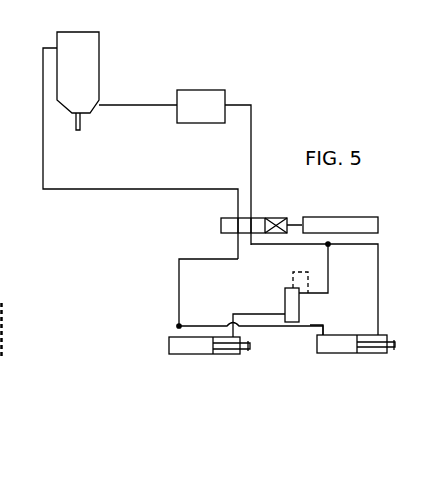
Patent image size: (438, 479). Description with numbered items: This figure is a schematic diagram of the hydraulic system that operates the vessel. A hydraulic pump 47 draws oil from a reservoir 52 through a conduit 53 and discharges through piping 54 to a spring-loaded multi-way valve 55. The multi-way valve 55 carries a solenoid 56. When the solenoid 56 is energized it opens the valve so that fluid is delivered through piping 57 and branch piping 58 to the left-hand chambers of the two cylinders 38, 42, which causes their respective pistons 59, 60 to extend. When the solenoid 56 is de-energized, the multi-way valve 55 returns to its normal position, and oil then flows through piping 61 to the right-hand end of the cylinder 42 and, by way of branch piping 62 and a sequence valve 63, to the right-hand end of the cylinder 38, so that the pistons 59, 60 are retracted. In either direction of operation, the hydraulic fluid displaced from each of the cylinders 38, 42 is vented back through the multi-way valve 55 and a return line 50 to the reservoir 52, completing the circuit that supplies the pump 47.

The cylinder 38 is at (180, 354).
The cylinder 42 is at (330, 353).
The hydraulic pump 47 is at (198, 90).
The return line 50 is at (140, 189).
The reservoir 52 is at (99, 42).
The conduit 53 is at (125, 105).
The piping 54 is at (251, 120).
The multi-way valve 55 is at (258, 218).
The solenoid 56 is at (337, 217).
The piping 57 is at (179, 289).
The branch piping 58 is at (281, 326).
The piston 59 is at (247, 352).
The piston 60 is at (395, 350).
The piping 61 is at (378, 263).
The branch piping 62 is at (328, 275).
The sequence valve 63 is at (299, 312).